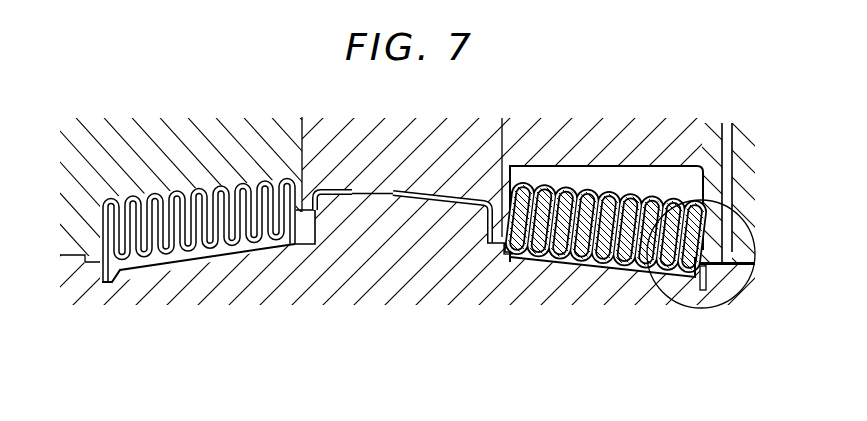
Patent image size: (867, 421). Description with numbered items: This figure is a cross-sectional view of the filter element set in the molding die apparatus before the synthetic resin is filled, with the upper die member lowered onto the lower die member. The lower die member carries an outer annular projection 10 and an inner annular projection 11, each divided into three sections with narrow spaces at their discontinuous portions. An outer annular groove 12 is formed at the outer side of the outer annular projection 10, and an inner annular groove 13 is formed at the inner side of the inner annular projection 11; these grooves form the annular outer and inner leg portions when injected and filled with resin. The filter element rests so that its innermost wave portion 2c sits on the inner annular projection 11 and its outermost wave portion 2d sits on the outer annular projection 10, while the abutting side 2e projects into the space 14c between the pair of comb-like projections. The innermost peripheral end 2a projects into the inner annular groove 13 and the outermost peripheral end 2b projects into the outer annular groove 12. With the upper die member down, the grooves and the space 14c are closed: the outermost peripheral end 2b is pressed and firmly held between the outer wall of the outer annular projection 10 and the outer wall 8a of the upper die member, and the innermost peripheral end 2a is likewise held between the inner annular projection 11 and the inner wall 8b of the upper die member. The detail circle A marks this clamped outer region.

The abutting side 2e is at (138, 196).
The space 14c is at (158, 262).
The inner annular groove 13 is at (516, 255).
The innermost peripheral end 2a is at (521, 258).
The inner annular projection 11 is at (517, 258).
The inner wall 8b is at (525, 165).
The outer wall 8a is at (691, 166).
The innermost wave portion 2c is at (528, 198).
The outermost wave portion 2d is at (688, 215).
The outermost peripheral end 2b is at (722, 270).
The outer annular projection 10 is at (693, 273).
The outer annular groove 12 is at (705, 277).
The detail circle A is at (705, 308).